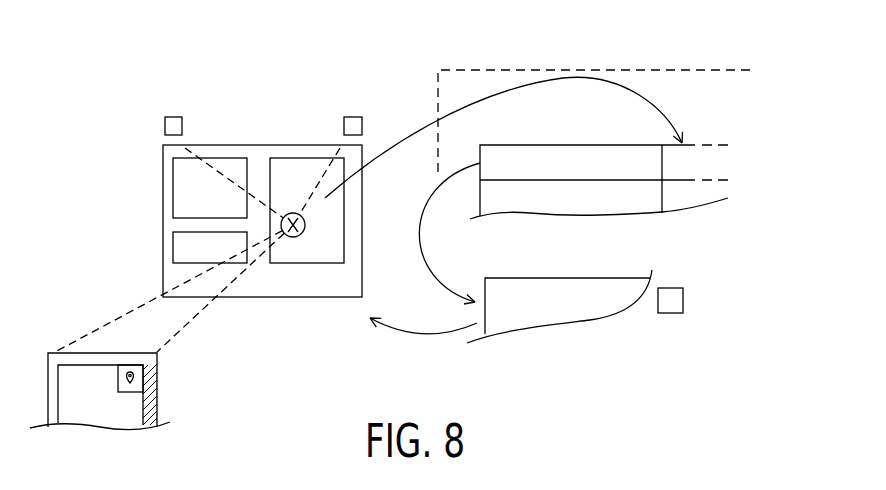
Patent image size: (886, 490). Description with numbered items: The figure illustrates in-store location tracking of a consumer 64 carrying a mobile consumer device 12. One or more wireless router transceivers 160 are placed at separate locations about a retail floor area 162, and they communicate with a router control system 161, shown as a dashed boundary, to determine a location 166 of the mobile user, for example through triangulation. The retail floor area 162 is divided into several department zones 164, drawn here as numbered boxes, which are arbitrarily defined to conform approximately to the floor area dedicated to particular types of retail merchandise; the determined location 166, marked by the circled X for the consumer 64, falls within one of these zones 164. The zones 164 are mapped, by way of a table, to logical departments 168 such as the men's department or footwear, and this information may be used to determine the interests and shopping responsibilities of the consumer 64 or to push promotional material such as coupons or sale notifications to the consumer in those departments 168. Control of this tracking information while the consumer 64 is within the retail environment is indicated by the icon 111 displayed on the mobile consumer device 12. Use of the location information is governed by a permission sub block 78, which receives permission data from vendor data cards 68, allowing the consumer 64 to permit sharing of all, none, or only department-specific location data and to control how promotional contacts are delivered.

The mobile consumer device 12 is at (83, 353).
The consumer 64 is at (293, 237).
The vendor data card 68 is at (683, 302).
The permission sub block 78 is at (578, 313).
The icon 111 is at (137, 387).
The wireless router transceivers 160 is at (344, 126).
The router control system 161 is at (515, 68).
The retail floor area 162 is at (163, 274).
The department zones 164 is at (173, 178).
The location 166 is at (308, 238).
The logical departments 168 is at (573, 145).